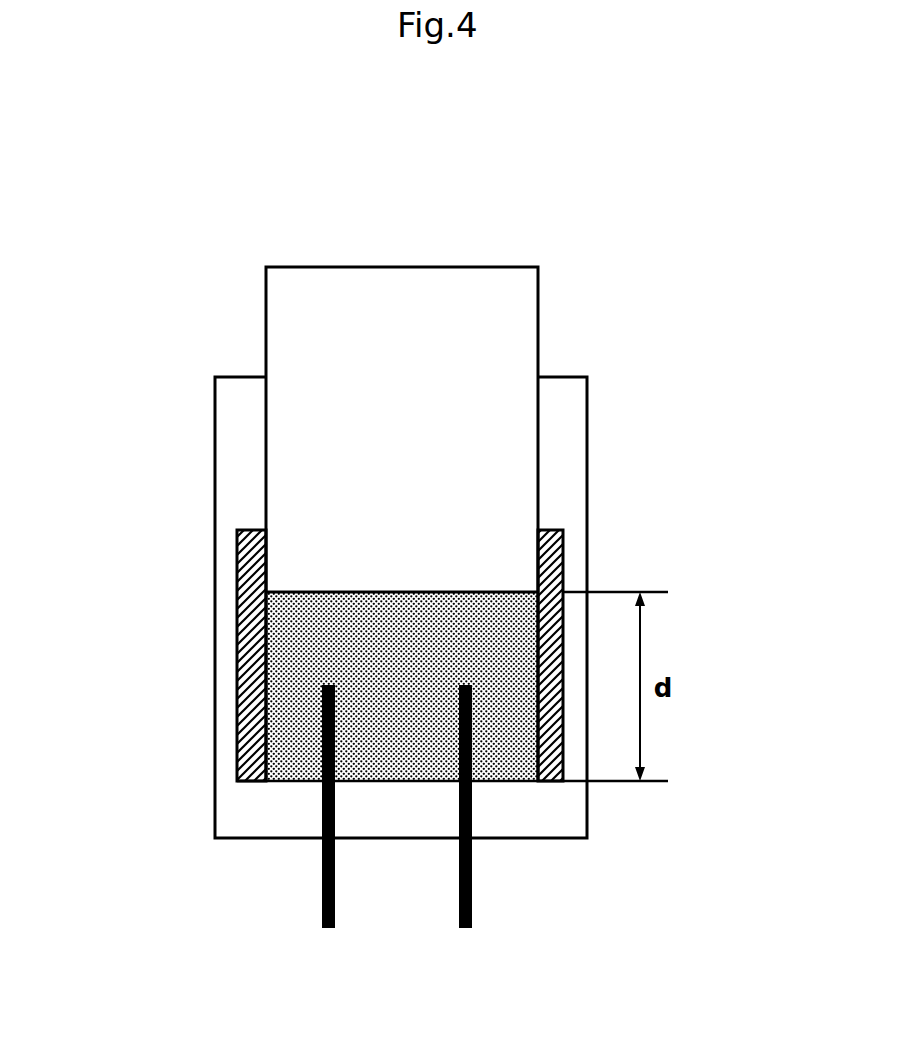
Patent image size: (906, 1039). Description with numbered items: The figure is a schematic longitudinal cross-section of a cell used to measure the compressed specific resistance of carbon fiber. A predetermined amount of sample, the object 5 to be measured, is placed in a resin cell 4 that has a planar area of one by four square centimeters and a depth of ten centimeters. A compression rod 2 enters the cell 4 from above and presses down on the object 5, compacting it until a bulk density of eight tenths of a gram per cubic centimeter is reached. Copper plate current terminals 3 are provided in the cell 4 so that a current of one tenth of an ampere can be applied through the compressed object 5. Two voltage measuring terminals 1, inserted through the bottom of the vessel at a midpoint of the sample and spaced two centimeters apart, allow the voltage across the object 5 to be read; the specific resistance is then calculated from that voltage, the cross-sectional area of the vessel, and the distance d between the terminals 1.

The voltage measuring terminals 1 is at (322, 858).
The compression rod 2 is at (478, 293).
The copper plate current terminal 3 is at (247, 613).
The resin cell 4 is at (560, 417).
The object to be measured 5 is at (503, 674).